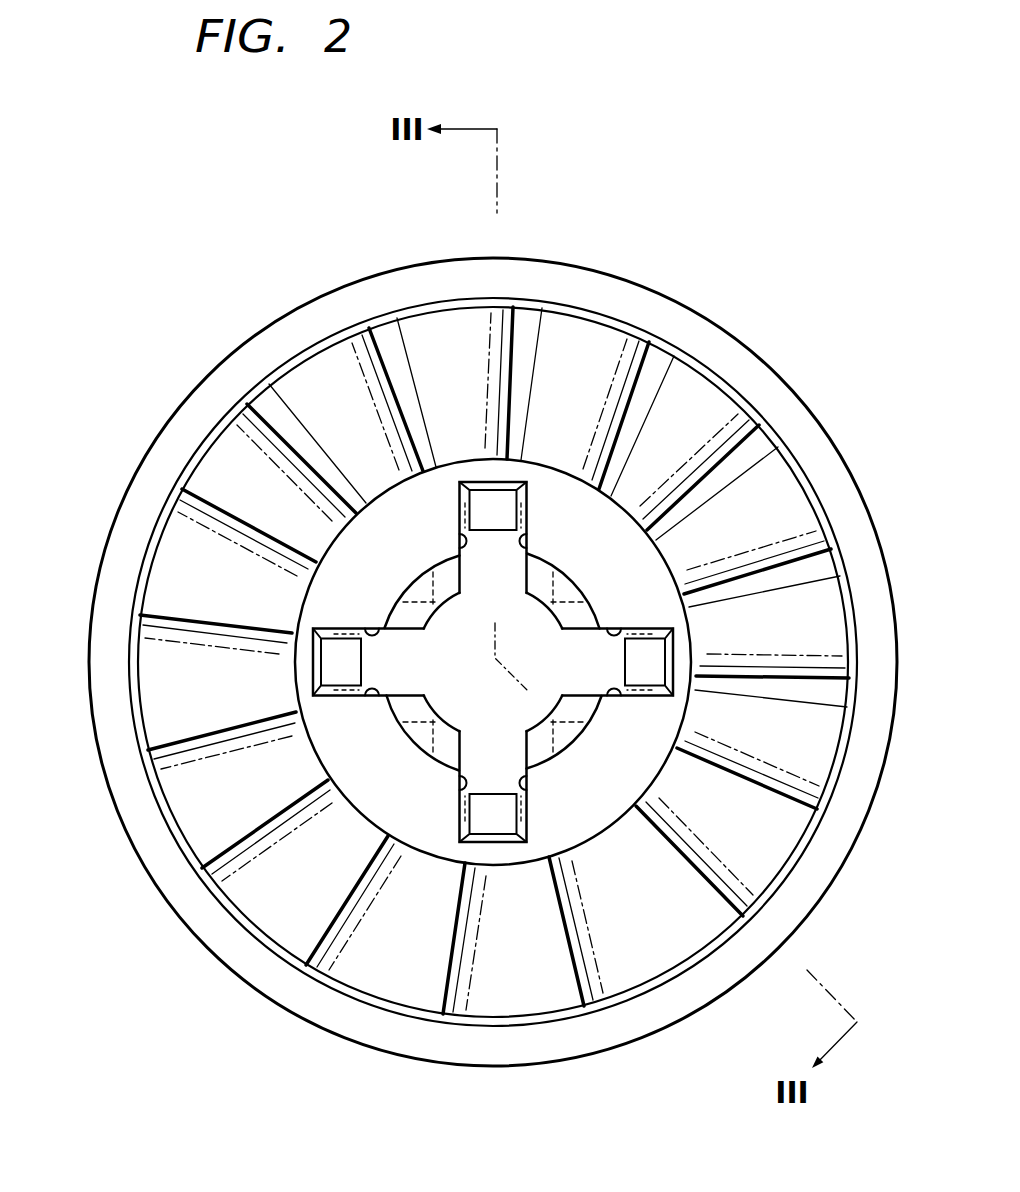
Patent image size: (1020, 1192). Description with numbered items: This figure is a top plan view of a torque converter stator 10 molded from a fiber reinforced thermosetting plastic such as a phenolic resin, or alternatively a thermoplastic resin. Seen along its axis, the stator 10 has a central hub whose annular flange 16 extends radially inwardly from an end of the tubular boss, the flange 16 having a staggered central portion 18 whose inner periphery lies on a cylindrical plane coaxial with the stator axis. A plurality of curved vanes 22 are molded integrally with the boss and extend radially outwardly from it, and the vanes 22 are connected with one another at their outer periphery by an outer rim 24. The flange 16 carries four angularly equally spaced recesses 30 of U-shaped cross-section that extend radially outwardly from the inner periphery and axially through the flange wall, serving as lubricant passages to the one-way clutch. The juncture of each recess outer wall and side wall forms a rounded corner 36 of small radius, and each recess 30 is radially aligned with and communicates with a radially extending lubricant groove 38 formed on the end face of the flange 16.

The torque converter stator 10 is at (748, 188).
The annular flange 16 is at (400, 493).
The staggered central portion 18 is at (558, 738).
The curved vanes 22 is at (390, 960).
The outer rim 24 is at (180, 450).
The recesses 30 is at (472, 589).
The rounded corner 36 is at (527, 547).
The lubricant groove 38 is at (492, 507).